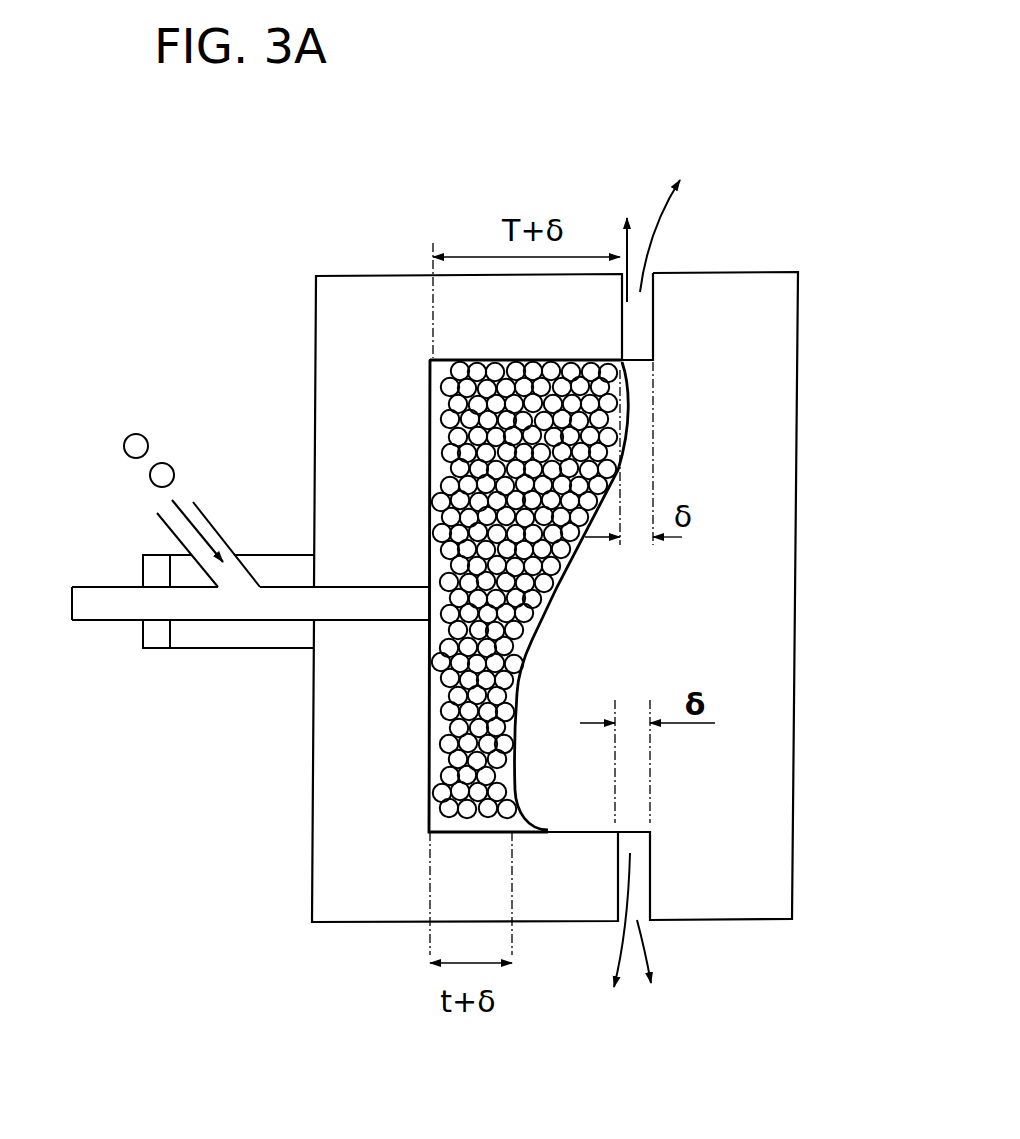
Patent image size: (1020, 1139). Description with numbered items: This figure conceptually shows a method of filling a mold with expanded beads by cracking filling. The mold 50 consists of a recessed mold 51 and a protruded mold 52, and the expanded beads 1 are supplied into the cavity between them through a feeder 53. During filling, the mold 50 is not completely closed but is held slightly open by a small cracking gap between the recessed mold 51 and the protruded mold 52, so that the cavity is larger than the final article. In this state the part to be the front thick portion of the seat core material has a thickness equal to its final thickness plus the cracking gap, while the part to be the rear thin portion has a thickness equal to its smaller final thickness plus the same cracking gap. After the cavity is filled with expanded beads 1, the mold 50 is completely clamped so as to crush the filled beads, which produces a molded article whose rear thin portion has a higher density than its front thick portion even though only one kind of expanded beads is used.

The mold 50 is at (293, 172).
The recessed mold 51 is at (334, 275).
The protruded mold 52 is at (767, 273).
The feeder 53 is at (212, 511).
The expanded beads 1 is at (138, 432).